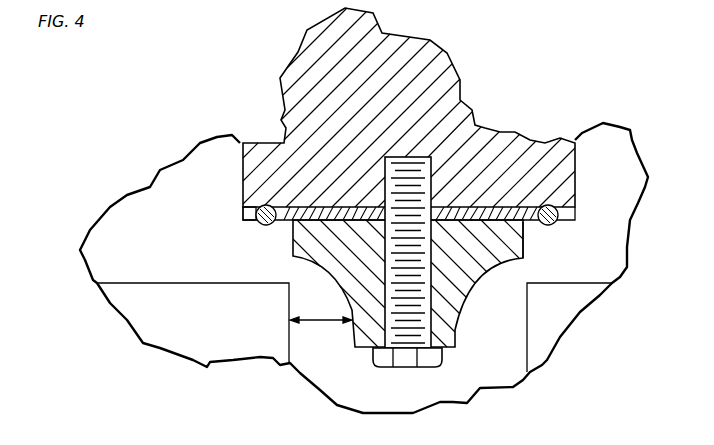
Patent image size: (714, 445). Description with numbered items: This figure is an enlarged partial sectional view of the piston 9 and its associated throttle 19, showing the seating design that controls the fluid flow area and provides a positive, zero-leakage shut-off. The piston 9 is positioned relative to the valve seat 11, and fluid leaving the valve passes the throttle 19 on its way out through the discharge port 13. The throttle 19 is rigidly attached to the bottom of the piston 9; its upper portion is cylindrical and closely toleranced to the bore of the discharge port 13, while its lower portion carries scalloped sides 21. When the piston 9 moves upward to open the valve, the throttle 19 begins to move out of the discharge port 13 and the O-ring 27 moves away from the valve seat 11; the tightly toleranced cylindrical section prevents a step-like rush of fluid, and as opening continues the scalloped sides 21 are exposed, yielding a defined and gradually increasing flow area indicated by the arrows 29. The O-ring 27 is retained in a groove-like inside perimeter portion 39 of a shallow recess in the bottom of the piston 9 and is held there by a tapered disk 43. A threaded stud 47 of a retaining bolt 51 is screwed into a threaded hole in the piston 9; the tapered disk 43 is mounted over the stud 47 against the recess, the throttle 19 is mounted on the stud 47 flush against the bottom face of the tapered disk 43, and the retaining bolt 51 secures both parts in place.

The piston 9 is at (577, 177).
The valve seat 11 is at (278, 277).
The discharge port 13 is at (522, 373).
The throttle 19 is at (527, 238).
The scalloped sides 21 is at (466, 300).
The O-ring 27 is at (267, 226).
The arrows 29 is at (320, 325).
The groove-like inside perimeter portion 39 is at (258, 207).
The tapered disk 43 is at (295, 206).
The threaded stud 47 is at (431, 177).
The retaining bolt 51 is at (407, 367).